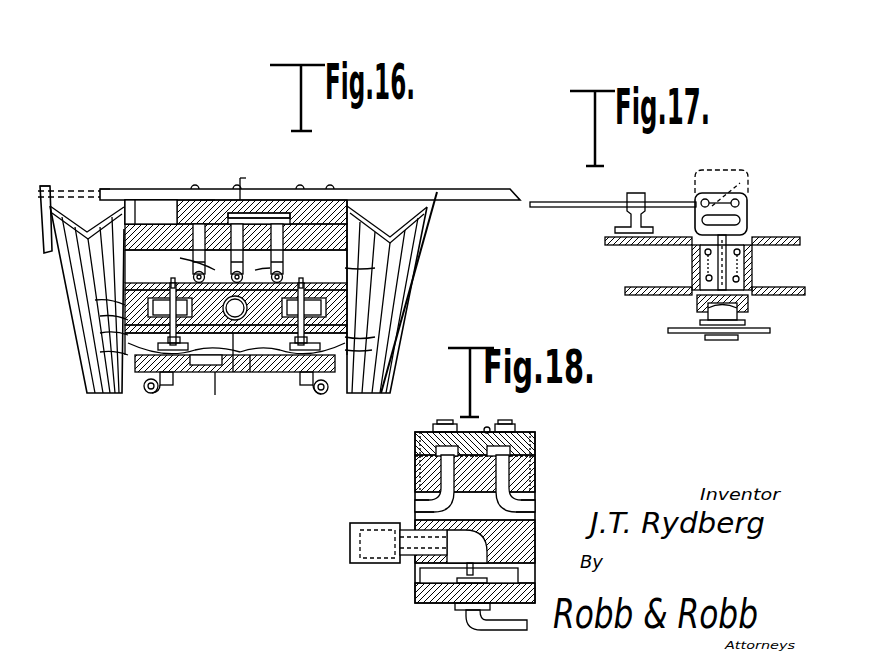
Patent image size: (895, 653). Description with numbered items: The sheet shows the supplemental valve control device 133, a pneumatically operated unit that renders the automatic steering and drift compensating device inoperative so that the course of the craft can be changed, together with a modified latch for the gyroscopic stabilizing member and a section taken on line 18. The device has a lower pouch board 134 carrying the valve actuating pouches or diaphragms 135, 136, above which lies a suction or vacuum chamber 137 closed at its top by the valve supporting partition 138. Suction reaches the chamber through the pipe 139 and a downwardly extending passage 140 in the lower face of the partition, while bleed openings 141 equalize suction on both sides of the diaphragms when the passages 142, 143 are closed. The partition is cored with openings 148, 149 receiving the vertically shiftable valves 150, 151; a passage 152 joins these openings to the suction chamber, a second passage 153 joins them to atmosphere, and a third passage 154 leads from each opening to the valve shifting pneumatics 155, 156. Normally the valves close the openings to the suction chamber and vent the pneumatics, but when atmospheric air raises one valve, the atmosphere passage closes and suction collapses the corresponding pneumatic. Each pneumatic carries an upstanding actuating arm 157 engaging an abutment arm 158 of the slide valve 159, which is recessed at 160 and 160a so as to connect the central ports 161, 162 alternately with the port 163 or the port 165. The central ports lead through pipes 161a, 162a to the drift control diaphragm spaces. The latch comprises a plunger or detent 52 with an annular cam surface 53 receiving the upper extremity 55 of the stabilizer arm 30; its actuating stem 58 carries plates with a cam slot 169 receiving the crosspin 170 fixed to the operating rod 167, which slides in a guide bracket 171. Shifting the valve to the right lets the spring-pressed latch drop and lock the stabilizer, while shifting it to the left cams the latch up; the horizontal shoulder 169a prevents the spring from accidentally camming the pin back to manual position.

In FIG. 16, the section line 18 is at (238, 475).
In FIG. 17, the stabilizer arm 30 is at (712, 334).
In FIG. 17, the plunger or detent 52 is at (748, 308).
In FIG. 17, the annular cam surface 53 is at (692, 312).
In FIG. 17, the upper extremity of stabilizer arm 55 is at (722, 340).
In FIG. 17, the actuating stem 58 is at (752, 265).
In FIG. 16, the supplemental valve control device 133 is at (160, 224).
In FIG. 16, the lower pouch board 134 is at (233, 375).
In FIG. 16, the valve actuating pouch or diaphragm 135 is at (125, 352).
In FIG. 16, the valve actuating pouch or diaphragm 136 is at (350, 350).
In FIG. 16, the suction or vacuum chamber 137 is at (345, 337).
In FIG. 16, the valve supporting partition 138 is at (347, 290).
In FIG. 18, the valve supporting partition 138 is at (415, 462).
In FIG. 16, the pipe 139 is at (215, 400).
In FIG. 18, the pipe 139 is at (348, 549).
In FIG. 16, the downwardly extending passage 140 is at (236, 312).
In FIG. 18, the downwardly extending passage 140 is at (482, 548).
In FIG. 16, the bleed opening 141 is at (262, 375).
In FIG. 16, the passage 142 is at (215, 375).
In FIG. 16, the passage 143 is at (300, 386).
In FIG. 18, the passage 143 is at (470, 626).
In FIG. 16, the opening 148 is at (125, 318).
In FIG. 16, the opening 149 is at (345, 268).
In FIG. 16, the vertically shiftable valve 150 is at (175, 282).
In FIG. 16, the vertically shiftable valve 151 is at (285, 282).
In FIG. 18, the vertically shiftable valve 151 is at (470, 520).
In FIG. 16, the passage 152 is at (125, 332).
In FIG. 16, the second passage 153 is at (125, 292).
In FIG. 16, the third passage 154 is at (125, 305).
In FIG. 16, the valve shifting pneumatic 155 is at (82, 265).
In FIG. 16, the valve shifting pneumatic 156 is at (400, 236).
In FIG. 16, the upstanding actuating arm 157 is at (42, 187).
In FIG. 18, the upstanding actuating arm 157 is at (437, 425).
In FIG. 16, the abutment arm 158 is at (100, 191).
In FIG. 18, the abutment arm 158 is at (433, 430).
In FIG. 16, the slide valve 159 is at (207, 200).
In FIG. 18, the slide valve 159 is at (535, 441).
In FIG. 16, the recess 160 is at (250, 215).
In FIG. 18, the recess 160 is at (510, 451).
In FIG. 16, the recess 160a is at (253, 213).
In FIG. 18, the recess 160a is at (436, 451).
In FIG. 16, the central port 161 is at (242, 272).
In FIG. 18, the central port 161 is at (509, 471).
In FIG. 18, the passage or pipe 161a is at (525, 508).
In FIG. 18, the central port 162 is at (447, 478).
In FIG. 18, the passage or pipe 162a is at (425, 507).
In FIG. 16, the port 163 is at (180, 258).
In FIG. 16, the port 165 is at (258, 272).
In FIG. 16, the operating rod 167 is at (513, 198).
In FIG. 17, the operating rod 167 is at (578, 194).
In FIG. 18, the operating rod 167 is at (489, 428).
In FIG. 17, the cam slot 169 is at (748, 200).
In FIG. 17, the horizontal shoulder 169a is at (706, 219).
In FIG. 17, the crosspin 170 is at (740, 204).
In FIG. 17, the guide bracket 171 is at (636, 193).